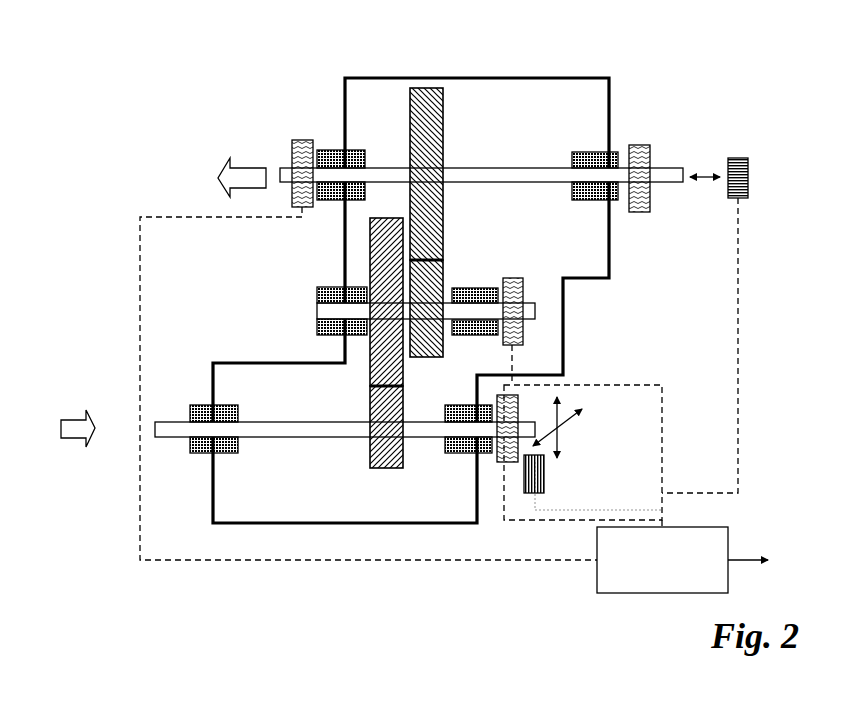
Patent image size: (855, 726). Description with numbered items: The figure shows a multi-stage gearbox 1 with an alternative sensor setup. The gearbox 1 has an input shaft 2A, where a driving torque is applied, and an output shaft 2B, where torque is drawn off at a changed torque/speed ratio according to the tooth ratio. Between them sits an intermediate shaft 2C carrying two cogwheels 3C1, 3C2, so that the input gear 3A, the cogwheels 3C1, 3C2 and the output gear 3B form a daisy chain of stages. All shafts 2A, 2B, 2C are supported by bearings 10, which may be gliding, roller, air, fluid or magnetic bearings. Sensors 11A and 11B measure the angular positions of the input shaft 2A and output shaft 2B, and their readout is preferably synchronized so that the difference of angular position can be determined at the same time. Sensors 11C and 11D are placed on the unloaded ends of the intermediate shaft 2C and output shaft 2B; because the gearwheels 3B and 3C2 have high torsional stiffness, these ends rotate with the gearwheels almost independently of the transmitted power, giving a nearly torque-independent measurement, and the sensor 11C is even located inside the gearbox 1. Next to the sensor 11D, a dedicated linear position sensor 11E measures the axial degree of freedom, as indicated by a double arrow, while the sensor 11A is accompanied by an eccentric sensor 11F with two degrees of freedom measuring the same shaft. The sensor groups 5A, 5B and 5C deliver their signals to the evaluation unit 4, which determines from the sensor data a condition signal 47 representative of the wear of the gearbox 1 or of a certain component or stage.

The gearbox 1 is at (610, 113).
The input shaft 2A is at (157, 432).
The output shaft 2B is at (662, 168).
The intermediate shaft 2C is at (318, 308).
The input gear 3A is at (385, 460).
The output gear 3B is at (410, 140).
The first intermediate cogwheel 3C1 is at (385, 275).
The second intermediate cogwheel 3C2 is at (440, 275).
The evaluation unit 4 is at (655, 572).
The sensor 5A is at (582, 520).
The sensor 5B is at (140, 332).
The sensor arrangement 5C is at (604, 383).
The bearing 10 is at (333, 160).
The sensor 11A is at (500, 458).
The sensor 11B is at (293, 150).
The sensor 11C is at (522, 332).
The sensor 11D is at (638, 205).
The linear position sensor 11E is at (738, 158).
The eccentric sensor 11F is at (532, 492).
The condition signal 47 is at (742, 560).